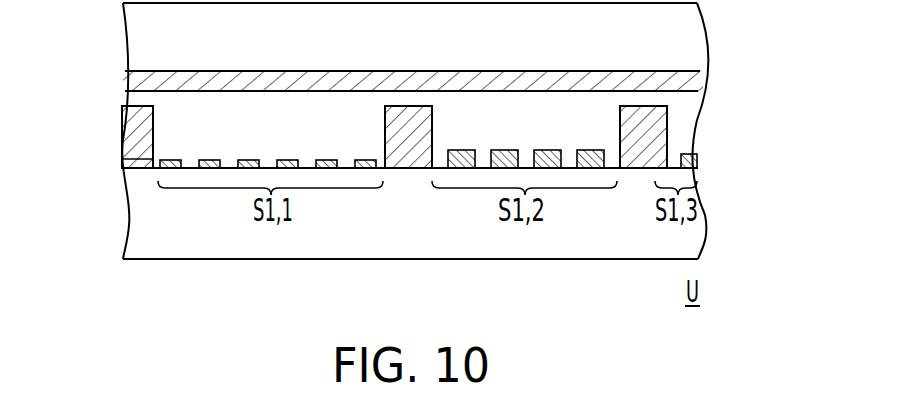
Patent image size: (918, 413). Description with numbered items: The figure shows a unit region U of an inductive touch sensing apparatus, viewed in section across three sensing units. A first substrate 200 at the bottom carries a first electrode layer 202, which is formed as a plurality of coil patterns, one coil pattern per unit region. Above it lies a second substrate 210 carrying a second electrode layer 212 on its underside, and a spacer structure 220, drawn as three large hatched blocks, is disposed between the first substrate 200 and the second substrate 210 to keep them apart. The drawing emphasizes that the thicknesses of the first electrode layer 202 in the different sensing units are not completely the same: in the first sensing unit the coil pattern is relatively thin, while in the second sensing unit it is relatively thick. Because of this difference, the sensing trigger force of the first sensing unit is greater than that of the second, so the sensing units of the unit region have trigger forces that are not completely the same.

The first substrate 200 is at (692, 246).
The first electrode layer 202 is at (147, 159).
The second substrate 210 is at (697, 38).
The second electrode layer 212 is at (697, 80).
The spacer structure 220 is at (135, 125).